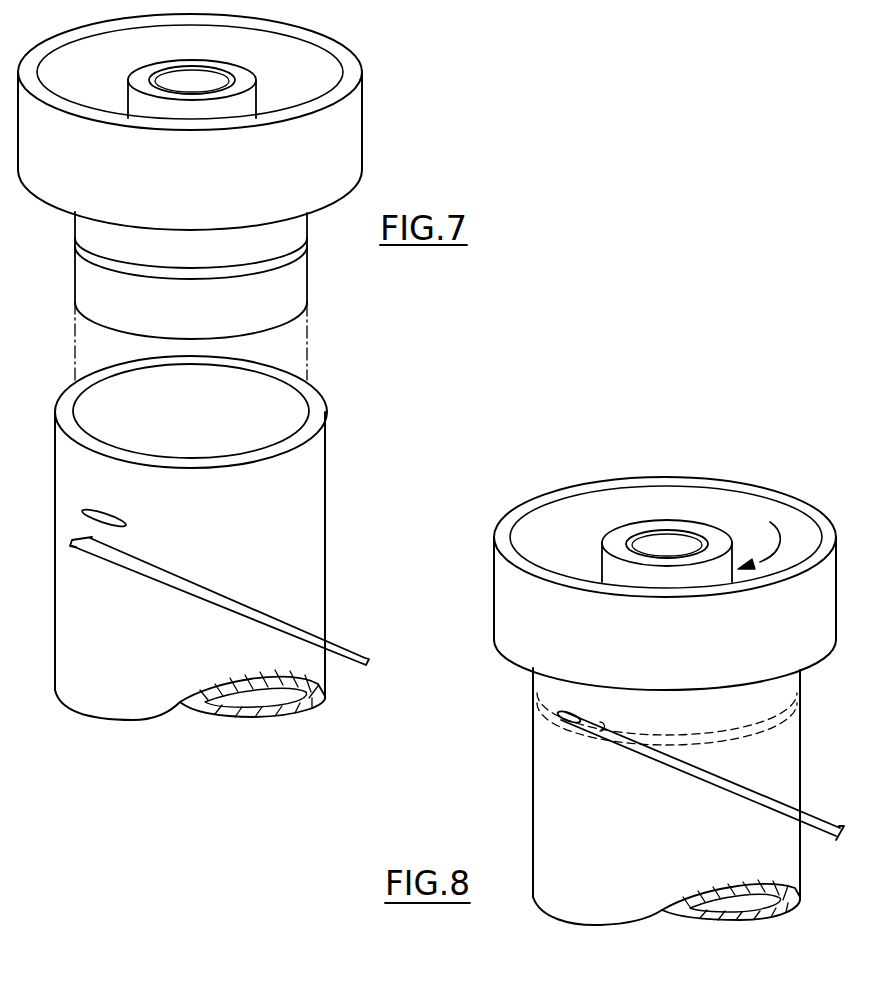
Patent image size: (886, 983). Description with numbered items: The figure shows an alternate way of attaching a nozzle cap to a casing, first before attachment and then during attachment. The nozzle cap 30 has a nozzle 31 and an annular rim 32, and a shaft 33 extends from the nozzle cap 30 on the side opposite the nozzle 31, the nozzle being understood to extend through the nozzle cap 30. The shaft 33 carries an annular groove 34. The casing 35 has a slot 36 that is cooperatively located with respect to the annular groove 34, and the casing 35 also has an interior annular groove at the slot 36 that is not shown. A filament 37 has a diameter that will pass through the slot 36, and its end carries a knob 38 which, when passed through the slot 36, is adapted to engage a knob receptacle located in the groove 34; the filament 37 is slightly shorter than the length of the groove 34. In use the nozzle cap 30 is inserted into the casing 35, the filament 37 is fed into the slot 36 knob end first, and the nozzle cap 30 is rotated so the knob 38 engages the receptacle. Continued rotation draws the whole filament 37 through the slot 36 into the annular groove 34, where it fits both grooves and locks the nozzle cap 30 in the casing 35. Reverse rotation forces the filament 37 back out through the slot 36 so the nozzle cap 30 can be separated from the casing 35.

In FIG. 7, the nozzle cap 30 is at (237, 122).
In FIG. 8, the nozzle cap 30 is at (637, 583).
In FIG. 7, the nozzle 31 is at (204, 80).
In FIG. 8, the nozzle 31 is at (680, 545).
In FIG. 7, the annular rim 32 is at (338, 157).
In FIG. 7, the shaft 33 is at (286, 290).
In FIG. 7, the annular groove 34 is at (290, 257).
In FIG. 7, the casing 35 is at (294, 572).
In FIG. 8, the casing 35 is at (560, 810).
In FIG. 7, the slot 36 is at (108, 515).
In FIG. 8, the slot 36 is at (572, 725).
In FIG. 7, the filament 37 is at (219, 601).
In FIG. 8, the filament 37 is at (807, 822).
In FIG. 7, the knob 38 is at (92, 540).